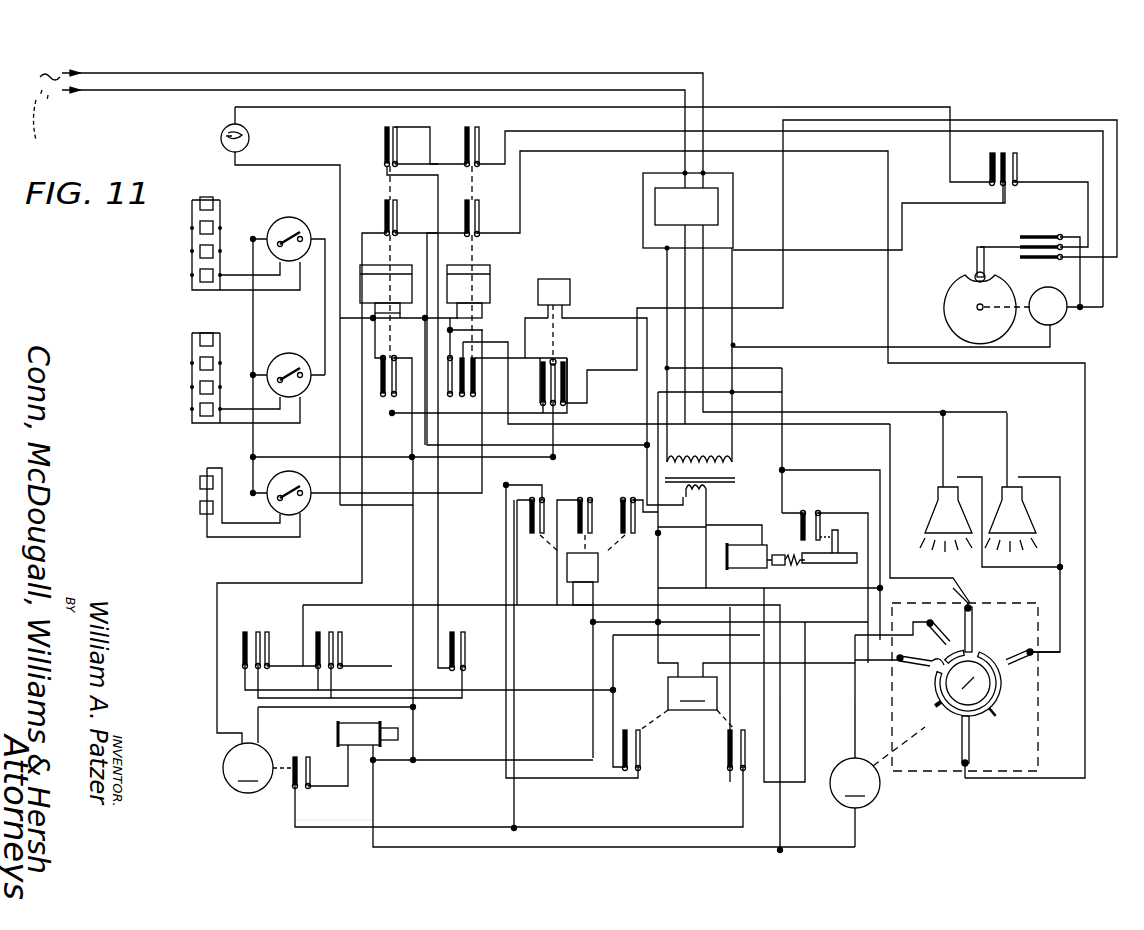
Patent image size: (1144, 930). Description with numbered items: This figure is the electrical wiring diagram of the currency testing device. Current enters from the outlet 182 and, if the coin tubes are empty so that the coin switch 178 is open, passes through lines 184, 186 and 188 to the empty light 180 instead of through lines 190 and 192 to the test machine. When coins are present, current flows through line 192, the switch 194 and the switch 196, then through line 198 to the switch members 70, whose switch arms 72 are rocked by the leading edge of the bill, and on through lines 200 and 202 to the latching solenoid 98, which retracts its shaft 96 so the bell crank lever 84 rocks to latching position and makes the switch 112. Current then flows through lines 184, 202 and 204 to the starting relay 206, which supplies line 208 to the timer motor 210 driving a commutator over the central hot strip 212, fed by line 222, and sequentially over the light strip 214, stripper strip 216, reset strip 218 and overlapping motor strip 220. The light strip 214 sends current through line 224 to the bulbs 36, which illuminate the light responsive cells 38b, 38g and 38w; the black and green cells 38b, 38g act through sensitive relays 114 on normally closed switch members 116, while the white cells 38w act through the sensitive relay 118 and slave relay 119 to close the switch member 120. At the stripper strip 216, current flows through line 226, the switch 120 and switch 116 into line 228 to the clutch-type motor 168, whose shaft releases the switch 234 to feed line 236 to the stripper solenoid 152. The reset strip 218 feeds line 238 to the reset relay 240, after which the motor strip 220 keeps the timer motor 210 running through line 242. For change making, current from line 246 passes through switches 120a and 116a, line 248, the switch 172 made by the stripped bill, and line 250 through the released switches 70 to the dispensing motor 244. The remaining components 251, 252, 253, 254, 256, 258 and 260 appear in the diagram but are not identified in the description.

The outlet 182 is at (355, 121).
The empty light 180 is at (250, 128).
The light responsive cells 38b is at (212, 197).
The light responsive cells 38g is at (207, 333).
The light responsive cells 38w is at (200, 483).
The sensitive relays 114 is at (297, 224).
The sensitive relay 118 is at (305, 510).
The switches 116a is at (386, 129).
The switch members 116 is at (383, 198).
The switches 120a is at (463, 128).
The switch member 120 is at (482, 184).
The slave relay 119 is at (490, 275).
The relay coil 253 is at (553, 279).
The switch 194 is at (567, 358).
The line 184 is at (530, 98).
The line 188 is at (830, 108).
The line 186 is at (862, 235).
The line 192 is at (783, 272).
The coin switch 178 is at (1020, 160).
The line 190 is at (1088, 196).
The cam switch contacts 256 is at (1010, 235).
The cam follower 254 is at (976, 276).
The roller 260 is at (1000, 282).
The cam 252 is at (956, 302).
The dispensing motor 244 is at (1040, 322).
The conductor 258 is at (1082, 310).
The line 246 is at (1103, 283).
The line 226 is at (1085, 388).
The line 222 is at (880, 483).
The bulbs 36 is at (920, 518).
The line 224 is at (1060, 586).
The switch 112 is at (795, 530).
The bell crank lever 84 is at (845, 563).
The shaft 96 is at (790, 565).
The solenoid 98 is at (745, 568).
The line 202 is at (712, 580).
The switch 196 is at (600, 535).
The reset relay 240 is at (598, 575).
The line 248 is at (438, 518).
The line 228 is at (362, 555).
The conductor 251 is at (375, 580).
The line 198 is at (486, 582).
The switch arms 72 is at (238, 632).
The switch members 70 is at (260, 636).
The switch 172 is at (464, 620).
The line 250 is at (440, 708).
The line 200 is at (527, 700).
The clutch-type motor 168 is at (259, 750).
The switch 234 is at (305, 754).
The line 236 is at (318, 795).
The stripper solenoid 152 is at (368, 734).
The starting relay 206 is at (747, 685).
The line 238 is at (720, 645).
The line 208 is at (780, 818).
The timer motor 210 is at (880, 734).
The line 242 is at (855, 705).
The line 204 is at (818, 675).
The central hot strip 212 is at (993, 716).
The motor strip 220 is at (980, 622).
The light strip 214 is at (1012, 640).
The reset strip 218 is at (920, 672).
The stripper strip 216 is at (945, 716).